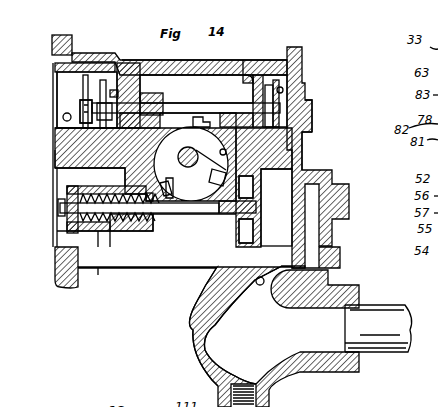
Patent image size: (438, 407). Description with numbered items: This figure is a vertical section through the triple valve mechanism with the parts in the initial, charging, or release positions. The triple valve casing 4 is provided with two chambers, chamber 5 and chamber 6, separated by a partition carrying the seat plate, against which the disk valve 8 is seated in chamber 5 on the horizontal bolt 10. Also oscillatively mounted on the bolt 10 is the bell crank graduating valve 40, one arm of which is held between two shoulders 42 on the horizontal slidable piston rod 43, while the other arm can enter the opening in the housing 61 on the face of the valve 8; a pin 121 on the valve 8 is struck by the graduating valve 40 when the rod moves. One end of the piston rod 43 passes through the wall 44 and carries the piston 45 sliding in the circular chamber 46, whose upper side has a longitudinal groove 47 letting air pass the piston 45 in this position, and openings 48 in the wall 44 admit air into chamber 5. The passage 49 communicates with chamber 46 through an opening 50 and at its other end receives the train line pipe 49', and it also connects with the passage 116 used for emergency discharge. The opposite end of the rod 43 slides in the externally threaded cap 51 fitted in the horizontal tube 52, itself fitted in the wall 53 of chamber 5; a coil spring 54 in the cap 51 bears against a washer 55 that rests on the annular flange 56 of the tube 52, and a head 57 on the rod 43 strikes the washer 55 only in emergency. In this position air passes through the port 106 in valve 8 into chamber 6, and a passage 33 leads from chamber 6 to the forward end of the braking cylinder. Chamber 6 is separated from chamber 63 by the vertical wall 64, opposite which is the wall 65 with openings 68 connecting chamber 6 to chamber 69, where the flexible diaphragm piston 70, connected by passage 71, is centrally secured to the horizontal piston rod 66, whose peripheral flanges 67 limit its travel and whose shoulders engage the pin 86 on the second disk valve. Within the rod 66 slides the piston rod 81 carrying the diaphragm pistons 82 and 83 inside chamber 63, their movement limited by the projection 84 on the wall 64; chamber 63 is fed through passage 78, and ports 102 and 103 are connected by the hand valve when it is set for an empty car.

The passage 33 is at (52, 60).
The vertical wall 64 is at (118, 60).
The projection 84 is at (114, 52).
The wall 65 is at (243, 60).
The triple valve casing 4 is at (260, 60).
The chamber 69 is at (292, 52).
The flexible diaphragm piston 70 is at (302, 62).
The passage 71 is at (304, 83).
The pin 121 is at (314, 110).
The housing 61 is at (308, 130).
The longitudinal groove 47 is at (300, 143).
The chamber 63 is at (70, 85).
The port 103 is at (85, 72).
The port 102 is at (102, 78).
The diaphragm flexible piston 83 is at (80, 108).
The passage 78 is at (63, 118).
The chamber 6 is at (196, 89).
The peripheral flanges 67 is at (143, 98).
The horizontal piston rod 66 is at (179, 104).
The pin 86 is at (204, 122).
The openings 68 is at (250, 92).
The disk valve 8 is at (145, 164).
The diaphragm flexible piston 82 is at (60, 140).
The piston rod 81 is at (58, 152).
The shoulders 42 is at (163, 190).
The port 106 is at (172, 182).
The bell crank graduating valve 40 is at (225, 160).
The wall 53 is at (125, 177).
The annular flange 56 is at (67, 190).
The head 57 is at (58, 208).
The horizontal bolt 10 is at (150, 214).
The coil spring 54 is at (100, 268).
The piston rod 43 is at (219, 214).
The wall 44 is at (240, 243).
The openings 48 is at (243, 184).
The piston 45 is at (276, 207).
The opening 50 is at (292, 211).
The circular chamber 46 is at (276, 227).
The chamber 5 is at (146, 230).
The washer 55 is at (56, 242).
The horizontal tube 52 is at (100, 276).
The externally threaded cap 51 is at (131, 268).
The passage 49 is at (235, 326).
The passage 116 is at (258, 286).
The train line pipe 49' is at (378, 344).